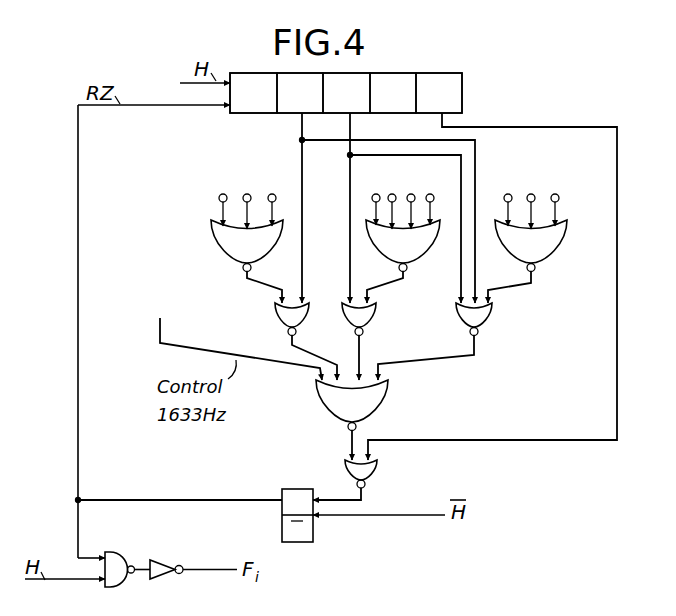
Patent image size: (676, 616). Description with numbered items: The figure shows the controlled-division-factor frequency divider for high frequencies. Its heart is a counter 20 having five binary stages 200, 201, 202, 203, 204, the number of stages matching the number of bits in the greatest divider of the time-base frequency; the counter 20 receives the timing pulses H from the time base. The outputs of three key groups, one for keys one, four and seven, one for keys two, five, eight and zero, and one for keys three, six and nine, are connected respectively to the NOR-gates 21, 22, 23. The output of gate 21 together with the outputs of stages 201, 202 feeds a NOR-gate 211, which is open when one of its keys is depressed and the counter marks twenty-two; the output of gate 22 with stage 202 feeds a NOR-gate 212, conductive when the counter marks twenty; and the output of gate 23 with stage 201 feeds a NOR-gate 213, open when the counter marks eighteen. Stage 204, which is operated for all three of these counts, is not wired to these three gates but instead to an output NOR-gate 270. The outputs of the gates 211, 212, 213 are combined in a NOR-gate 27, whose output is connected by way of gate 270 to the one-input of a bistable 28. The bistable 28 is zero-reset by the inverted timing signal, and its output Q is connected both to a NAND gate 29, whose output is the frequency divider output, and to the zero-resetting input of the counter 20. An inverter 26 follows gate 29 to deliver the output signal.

The counter 20 is at (365, 93).
The counter stage 200 is at (253, 93).
The counter stage 201 is at (300, 93).
The counter stage 202 is at (346, 93).
The counter stage 203 is at (393, 93).
The counter stage 204 is at (439, 93).
The NOR-gate 21 is at (540, 243).
The NOR-gate 22 is at (418, 242).
The NOR-gate 23 is at (222, 243).
The NOR-gate 211 is at (487, 313).
The NOR-gate 212 is at (371, 314).
The NOR-gate 213 is at (276, 312).
The NOR-gate 27 is at (384, 391).
The output NOR-gate 270 is at (376, 466).
The bistable 28 is at (298, 489).
The NAND gate 29 is at (118, 547).
The inverter 26 is at (168, 560).